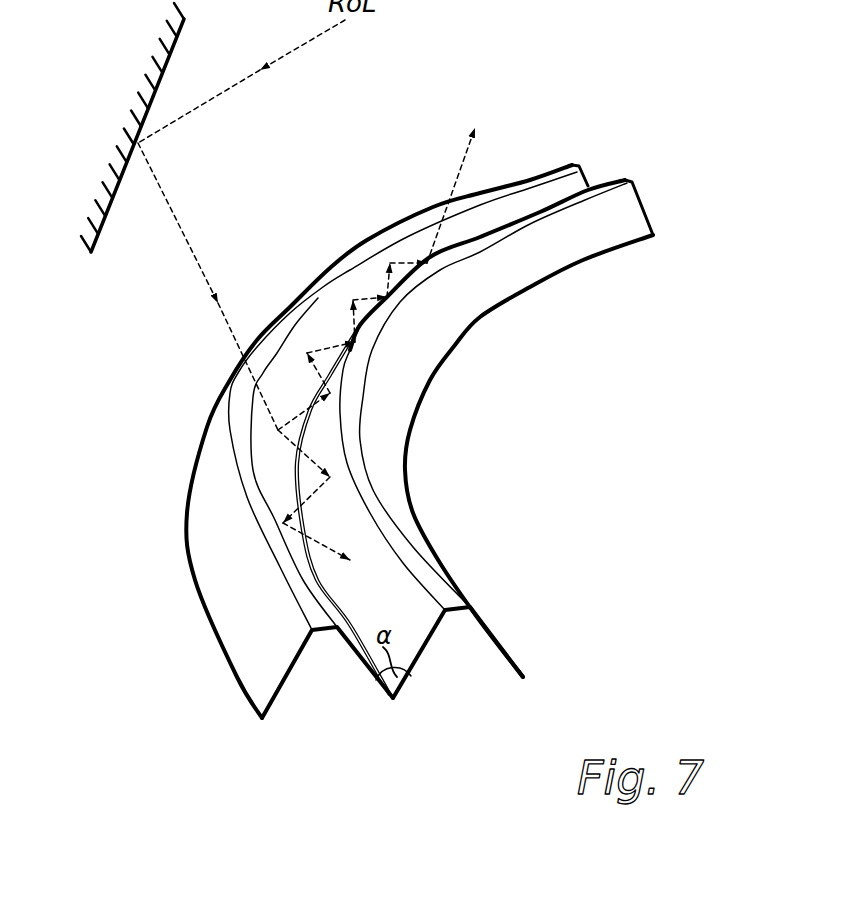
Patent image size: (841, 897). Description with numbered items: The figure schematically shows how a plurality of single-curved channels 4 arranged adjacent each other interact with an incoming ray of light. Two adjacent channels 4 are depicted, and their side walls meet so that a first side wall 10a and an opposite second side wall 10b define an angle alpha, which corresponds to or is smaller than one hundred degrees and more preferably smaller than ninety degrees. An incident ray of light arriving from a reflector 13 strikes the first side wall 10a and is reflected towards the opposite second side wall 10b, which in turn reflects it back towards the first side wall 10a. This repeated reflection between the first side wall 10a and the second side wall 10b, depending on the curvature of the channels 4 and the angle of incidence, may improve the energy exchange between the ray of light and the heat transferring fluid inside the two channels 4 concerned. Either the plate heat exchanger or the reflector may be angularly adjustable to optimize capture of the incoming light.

The reflector 13 is at (104, 219).
The first side wall 10a is at (425, 657).
The second side wall 10b is at (365, 665).
The single-curved channel 4 is at (317, 675).